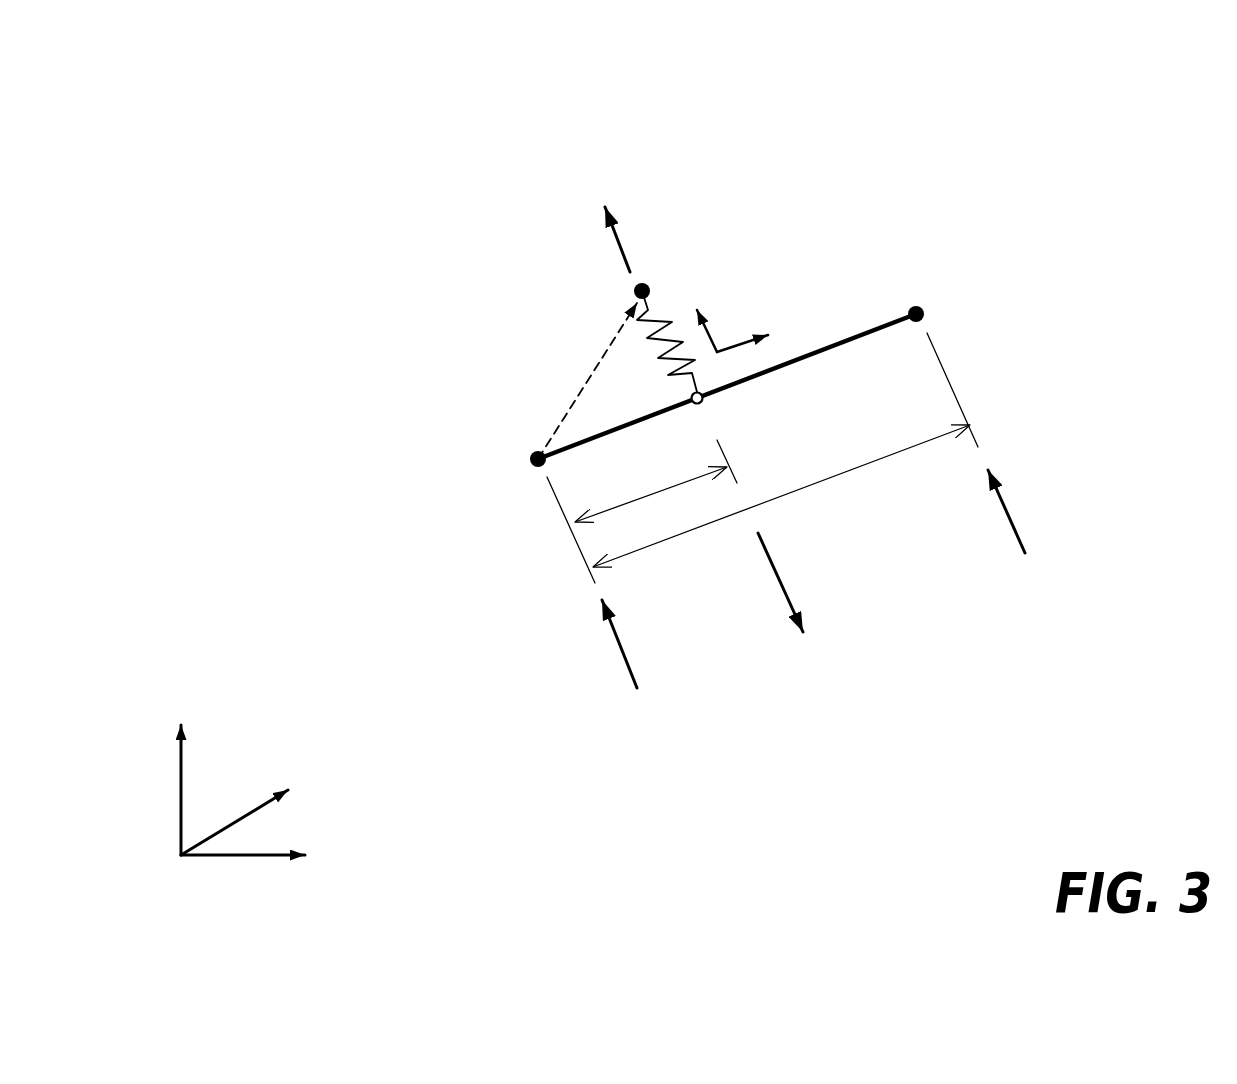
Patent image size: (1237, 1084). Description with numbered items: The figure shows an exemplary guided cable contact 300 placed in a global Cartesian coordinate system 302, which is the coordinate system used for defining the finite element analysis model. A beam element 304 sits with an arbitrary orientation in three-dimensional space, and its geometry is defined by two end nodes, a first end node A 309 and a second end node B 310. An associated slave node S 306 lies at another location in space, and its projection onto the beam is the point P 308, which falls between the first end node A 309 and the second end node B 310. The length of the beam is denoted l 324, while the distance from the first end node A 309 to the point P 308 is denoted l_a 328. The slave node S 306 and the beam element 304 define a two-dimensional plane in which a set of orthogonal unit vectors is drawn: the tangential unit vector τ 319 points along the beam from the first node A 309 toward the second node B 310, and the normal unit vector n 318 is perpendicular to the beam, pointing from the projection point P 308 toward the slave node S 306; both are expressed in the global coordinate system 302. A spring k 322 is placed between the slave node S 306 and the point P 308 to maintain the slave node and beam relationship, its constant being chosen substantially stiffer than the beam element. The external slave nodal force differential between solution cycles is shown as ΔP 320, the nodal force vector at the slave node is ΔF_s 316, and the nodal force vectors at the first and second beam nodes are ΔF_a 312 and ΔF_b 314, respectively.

The guided cable contact 300 is at (1210, 137).
The global Cartesian coordinate system 302 is at (225, 757).
The beam element 304 is at (858, 327).
The slave node S 306 is at (658, 273).
The projection point P 308 is at (712, 403).
The first end node A 309 is at (515, 470).
The second end node B 310 is at (937, 308).
The nodal force vector ΔF_a 312 is at (608, 647).
The nodal force vector ΔF_b 314 is at (1018, 505).
The nodal force vector ΔF_s 316 is at (612, 250).
The normal unit vector n 318 is at (717, 273).
The tangential unit vector τ 319 is at (803, 292).
The external slave nodal force differential ΔP 320 is at (780, 612).
The spring k 322 is at (640, 367).
The beam length l 324 is at (938, 445).
The distance l_a 328 is at (630, 510).